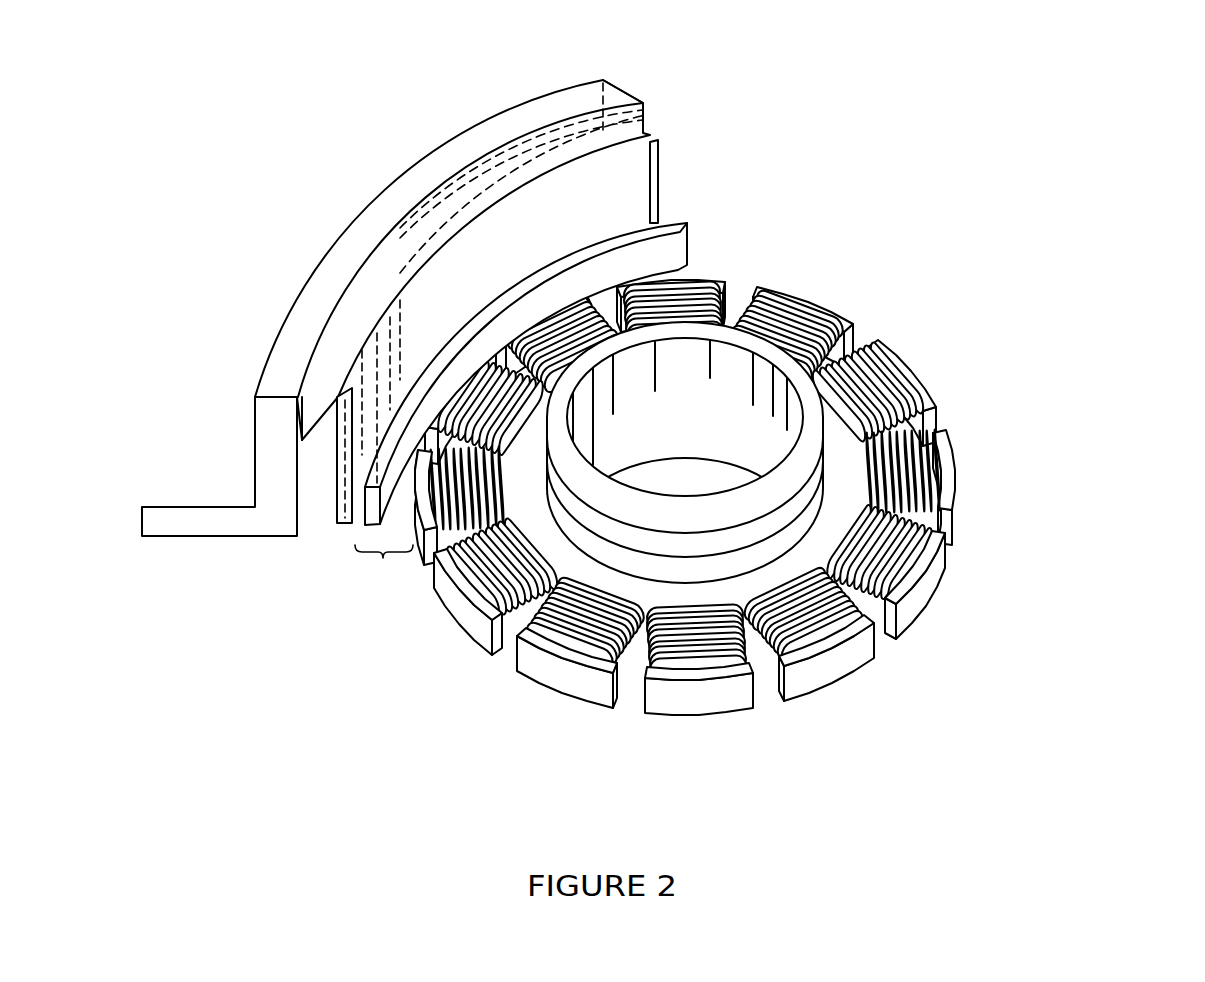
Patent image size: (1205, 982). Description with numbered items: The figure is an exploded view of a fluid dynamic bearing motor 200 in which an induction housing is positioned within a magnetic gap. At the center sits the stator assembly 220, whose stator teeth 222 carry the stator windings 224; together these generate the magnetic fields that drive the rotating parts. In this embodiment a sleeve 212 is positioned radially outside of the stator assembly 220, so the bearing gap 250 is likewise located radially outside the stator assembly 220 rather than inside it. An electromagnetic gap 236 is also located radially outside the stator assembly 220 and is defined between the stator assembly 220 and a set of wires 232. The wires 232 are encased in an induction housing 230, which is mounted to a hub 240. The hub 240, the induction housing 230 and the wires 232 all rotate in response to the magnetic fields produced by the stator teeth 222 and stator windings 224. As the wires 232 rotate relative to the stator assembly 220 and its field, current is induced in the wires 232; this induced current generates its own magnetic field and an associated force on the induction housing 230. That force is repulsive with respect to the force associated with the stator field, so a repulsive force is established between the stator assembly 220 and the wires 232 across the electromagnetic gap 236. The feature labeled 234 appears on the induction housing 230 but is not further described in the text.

The fluid dynamic bearing motor 200 is at (850, 123).
The sleeve 212 is at (668, 255).
The stator assembly 220 is at (817, 645).
The stator teeth 222 is at (950, 450).
The stator windings 224 is at (497, 587).
The induction housing 230 is at (477, 235).
The wires 232 is at (385, 333).
The groove 234 is at (558, 163).
The electromagnetic gap 236 is at (384, 568).
The hub 240 is at (272, 488).
The bearing gap 250 is at (388, 418).